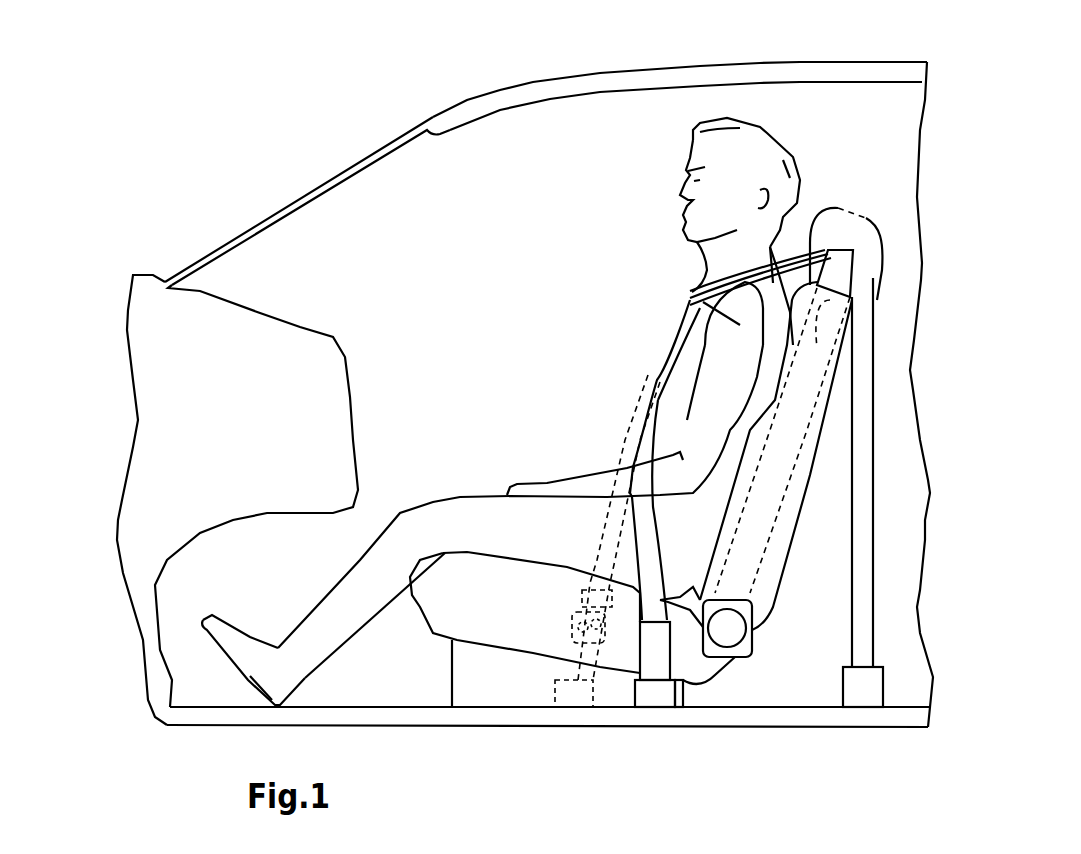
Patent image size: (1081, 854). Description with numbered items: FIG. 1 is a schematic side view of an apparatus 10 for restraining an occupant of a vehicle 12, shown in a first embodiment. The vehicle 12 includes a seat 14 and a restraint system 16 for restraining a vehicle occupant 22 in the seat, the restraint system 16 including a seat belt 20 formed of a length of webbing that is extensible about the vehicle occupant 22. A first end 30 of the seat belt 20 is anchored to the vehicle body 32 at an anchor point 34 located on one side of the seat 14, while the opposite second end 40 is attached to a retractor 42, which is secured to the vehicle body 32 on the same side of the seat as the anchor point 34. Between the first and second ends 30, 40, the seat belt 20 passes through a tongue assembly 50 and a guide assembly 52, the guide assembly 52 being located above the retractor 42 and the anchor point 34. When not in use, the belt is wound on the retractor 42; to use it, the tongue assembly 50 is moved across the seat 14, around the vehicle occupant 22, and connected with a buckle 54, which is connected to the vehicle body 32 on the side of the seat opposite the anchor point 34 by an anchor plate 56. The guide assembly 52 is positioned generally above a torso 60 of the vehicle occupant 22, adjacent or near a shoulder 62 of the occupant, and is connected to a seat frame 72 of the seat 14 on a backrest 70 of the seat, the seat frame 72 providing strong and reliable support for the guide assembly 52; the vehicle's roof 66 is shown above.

The apparatus 10 is at (970, 648).
The vehicle 12 is at (525, 375).
The seat 14 is at (797, 475).
The restraint system 16 is at (546, 745).
The seat belt 20 is at (633, 445).
The vehicle occupant 22 is at (677, 393).
The first end 30 is at (650, 583).
The vehicle body 32 is at (743, 717).
The anchor point 34 is at (660, 697).
The second end 40 is at (867, 628).
The retractor 42 is at (860, 687).
The tongue assembly 50 is at (582, 595).
The guide assembly 52 is at (847, 260).
The buckle 54 is at (573, 630).
The anchor plate 56 is at (563, 693).
The torso 60 is at (680, 357).
The shoulder 62 is at (703, 302).
The roof 66 is at (575, 88).
The backrest 70 is at (817, 438).
The seat frame 72 is at (817, 348).